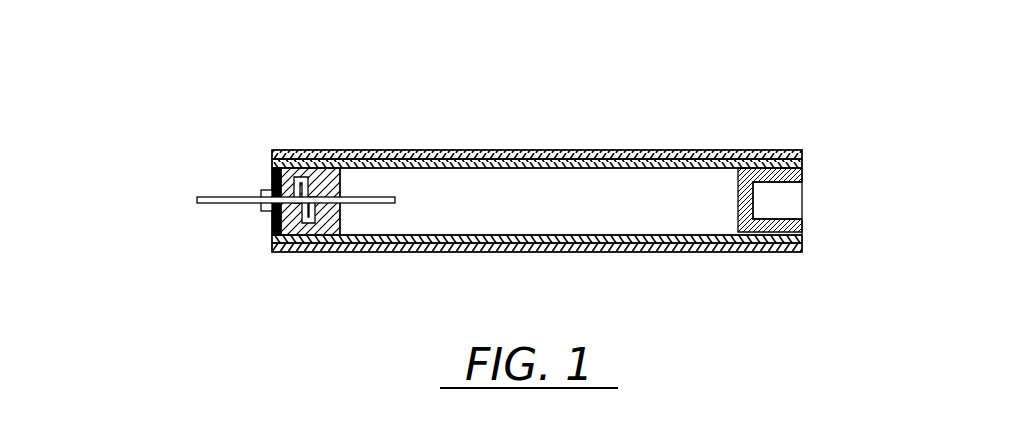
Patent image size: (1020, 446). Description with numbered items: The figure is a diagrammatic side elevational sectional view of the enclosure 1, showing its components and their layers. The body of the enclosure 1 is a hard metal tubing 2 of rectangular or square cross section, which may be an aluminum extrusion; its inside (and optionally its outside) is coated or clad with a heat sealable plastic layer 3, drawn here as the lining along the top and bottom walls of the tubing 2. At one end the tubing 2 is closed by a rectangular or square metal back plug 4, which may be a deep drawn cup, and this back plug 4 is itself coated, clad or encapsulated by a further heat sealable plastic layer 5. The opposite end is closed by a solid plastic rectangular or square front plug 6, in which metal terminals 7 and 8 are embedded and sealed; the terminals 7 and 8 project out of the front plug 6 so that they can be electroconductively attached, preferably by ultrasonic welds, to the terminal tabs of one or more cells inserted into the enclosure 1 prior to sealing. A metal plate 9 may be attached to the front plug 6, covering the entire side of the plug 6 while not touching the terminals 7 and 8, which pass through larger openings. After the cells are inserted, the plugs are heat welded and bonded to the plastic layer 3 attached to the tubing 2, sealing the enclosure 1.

The enclosure 1 is at (476, 176).
The metal tubing 2 is at (443, 150).
The heat sealable plastic layer 3 is at (558, 150).
The back plug 4 is at (758, 197).
The heat sealable plastic layer 5 is at (738, 191).
The front plug 6 is at (337, 165).
The metal terminal 7 is at (197, 196).
The metal terminal 8 is at (221, 144).
The metal plate 9 is at (268, 188).